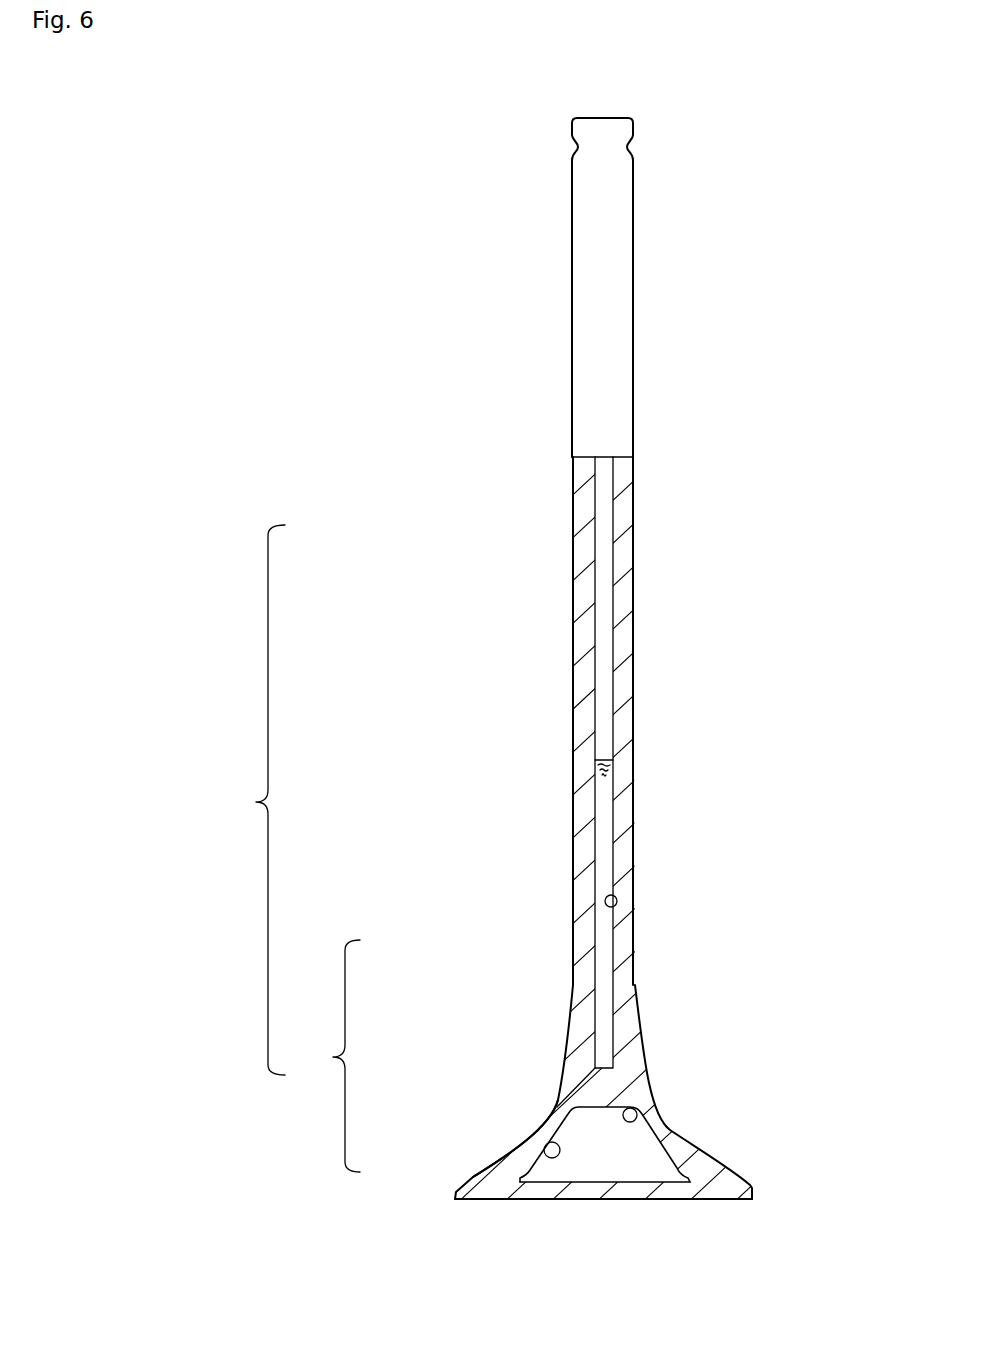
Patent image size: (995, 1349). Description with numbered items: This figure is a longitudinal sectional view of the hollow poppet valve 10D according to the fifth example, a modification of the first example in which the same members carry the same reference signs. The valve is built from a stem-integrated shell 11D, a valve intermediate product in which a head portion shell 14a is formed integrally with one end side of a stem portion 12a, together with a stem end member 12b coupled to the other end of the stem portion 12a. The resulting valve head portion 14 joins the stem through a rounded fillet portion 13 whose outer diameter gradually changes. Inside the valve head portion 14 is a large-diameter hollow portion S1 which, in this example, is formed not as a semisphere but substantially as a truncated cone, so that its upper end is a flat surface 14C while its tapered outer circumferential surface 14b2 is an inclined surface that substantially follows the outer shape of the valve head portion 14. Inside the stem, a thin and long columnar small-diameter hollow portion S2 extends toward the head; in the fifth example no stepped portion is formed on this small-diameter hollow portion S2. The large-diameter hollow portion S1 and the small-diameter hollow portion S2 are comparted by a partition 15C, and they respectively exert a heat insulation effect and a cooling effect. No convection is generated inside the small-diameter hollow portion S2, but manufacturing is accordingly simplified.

The hollow poppet valve 10D is at (245, 800).
The stem-integrated shell 11D is at (321, 1056).
The stem end member 12b is at (572, 413).
The stem portion 12a is at (574, 988).
The fillet portion 13 is at (556, 1108).
The valve head portion 14 is at (590, 1110).
The head portion shell 14a is at (477, 1198).
The tapered outer circumferential surface 14b2 is at (545, 1147).
The flat surface 14C is at (637, 1118).
The partition 15C is at (607, 1093).
The large-diameter hollow portion S1 is at (633, 1170).
The small-diameter hollow portion S2 is at (617, 903).